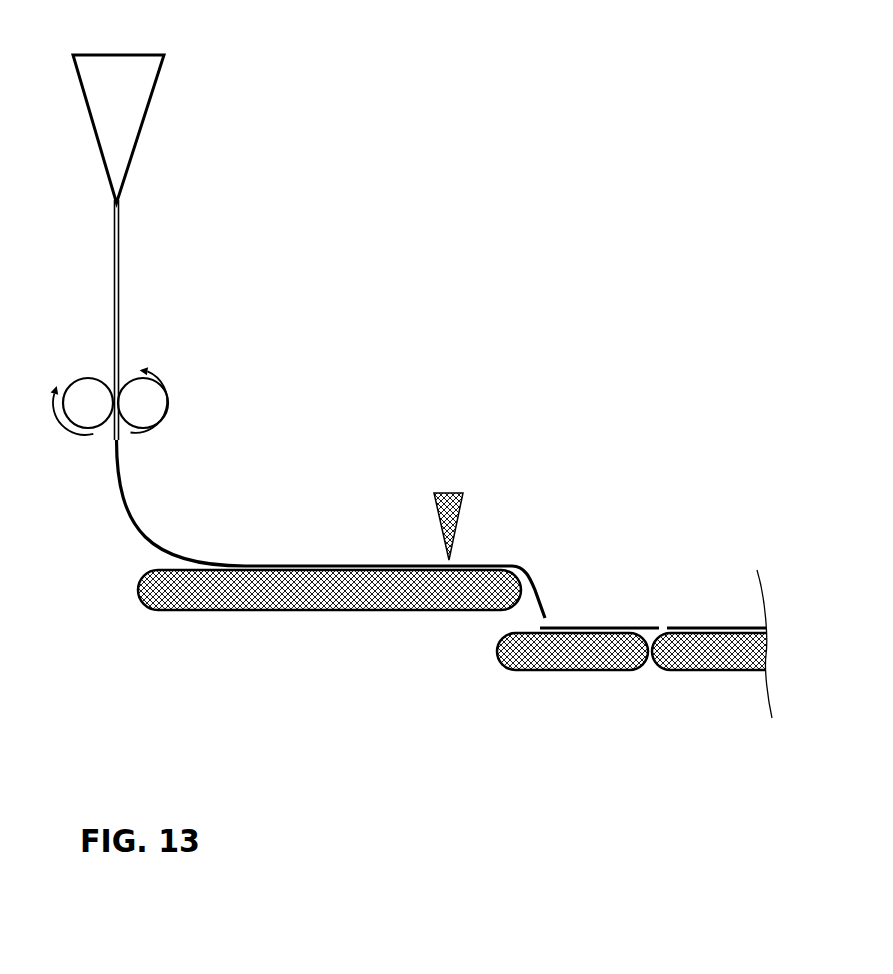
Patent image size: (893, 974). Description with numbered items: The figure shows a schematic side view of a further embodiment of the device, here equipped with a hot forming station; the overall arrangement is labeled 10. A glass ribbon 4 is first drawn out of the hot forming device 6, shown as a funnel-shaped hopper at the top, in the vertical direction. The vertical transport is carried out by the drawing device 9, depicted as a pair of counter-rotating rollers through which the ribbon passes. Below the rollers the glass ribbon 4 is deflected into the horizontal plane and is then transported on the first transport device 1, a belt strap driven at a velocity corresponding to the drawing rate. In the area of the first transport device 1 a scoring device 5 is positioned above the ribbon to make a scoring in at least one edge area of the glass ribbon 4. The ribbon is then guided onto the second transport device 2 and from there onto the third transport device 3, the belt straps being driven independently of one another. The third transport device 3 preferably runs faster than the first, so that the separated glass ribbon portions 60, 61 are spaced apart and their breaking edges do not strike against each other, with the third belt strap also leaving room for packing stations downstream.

The first transport device 1 is at (378, 610).
The second transport device 2 is at (527, 672).
The third transport device 3 is at (690, 672).
The glass ribbon 4 is at (237, 565).
The scoring device 5 is at (437, 505).
The hot forming device 6 is at (134, 153).
The drawing device 9 is at (170, 400).
The apparatus 10 is at (412, 342).
The glass ribbon portion 60 is at (565, 628).
The glass ribbon portion 61 is at (683, 628).